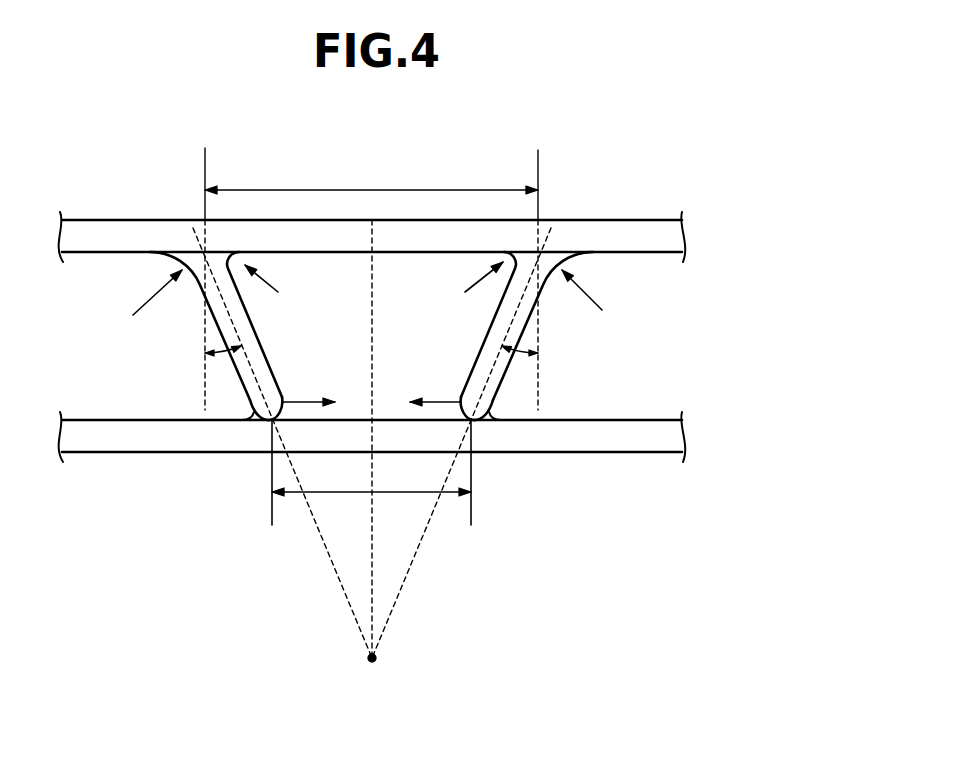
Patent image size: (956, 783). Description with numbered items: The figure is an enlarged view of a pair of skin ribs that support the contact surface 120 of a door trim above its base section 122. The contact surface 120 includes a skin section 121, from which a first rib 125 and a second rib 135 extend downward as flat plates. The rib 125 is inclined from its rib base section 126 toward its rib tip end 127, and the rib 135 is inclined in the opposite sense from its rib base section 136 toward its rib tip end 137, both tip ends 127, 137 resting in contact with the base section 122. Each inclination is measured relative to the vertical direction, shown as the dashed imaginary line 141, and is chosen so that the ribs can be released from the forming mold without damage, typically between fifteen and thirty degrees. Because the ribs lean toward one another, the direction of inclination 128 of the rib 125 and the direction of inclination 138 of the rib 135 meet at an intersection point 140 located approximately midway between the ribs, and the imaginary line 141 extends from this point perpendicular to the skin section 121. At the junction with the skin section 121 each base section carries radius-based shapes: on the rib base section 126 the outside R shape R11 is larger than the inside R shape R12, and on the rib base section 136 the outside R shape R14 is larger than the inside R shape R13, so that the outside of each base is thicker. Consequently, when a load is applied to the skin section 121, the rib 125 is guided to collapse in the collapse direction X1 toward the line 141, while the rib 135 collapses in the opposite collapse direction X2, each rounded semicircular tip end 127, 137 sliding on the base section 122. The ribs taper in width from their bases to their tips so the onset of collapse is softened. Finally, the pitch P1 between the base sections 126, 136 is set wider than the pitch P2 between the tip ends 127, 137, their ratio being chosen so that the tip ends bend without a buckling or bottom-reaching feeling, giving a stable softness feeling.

The contact surface 120 is at (372, 189).
The skin section 121 is at (657, 220).
The base section 122 is at (372, 471).
The rib 125 is at (199, 343).
The rib base section 126 is at (197, 270).
The rib tip end 127 is at (227, 472).
The direction of inclination 128 is at (330, 565).
The rib 135 is at (528, 343).
The rib base section 136 is at (549, 265).
The rib tip end 137 is at (495, 424).
The direction of inclination 138 is at (417, 552).
The intersection point 140 is at (378, 657).
The imaginary line 141 is at (372, 340).
The pitch P1 is at (371, 180).
The pitch P2 is at (371, 505).
The collapse direction X1 is at (309, 390).
The collapse direction X2 is at (435, 390).
The R shape R11 is at (147, 292).
The R shape R12 is at (278, 276).
The R shape R13 is at (468, 276).
The R shape R14 is at (599, 290).